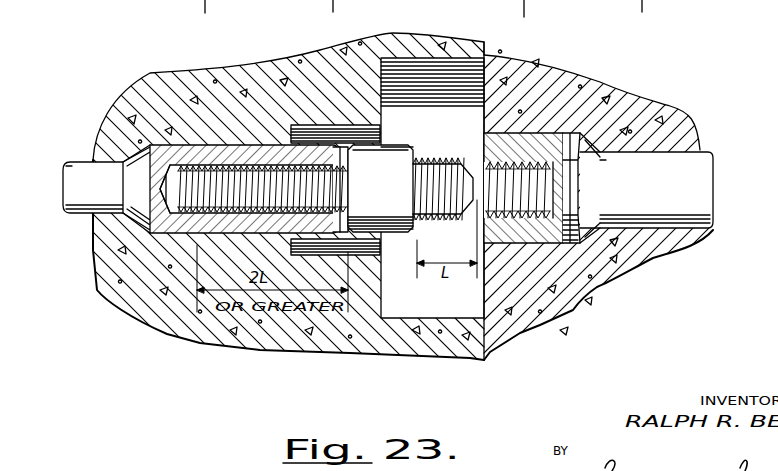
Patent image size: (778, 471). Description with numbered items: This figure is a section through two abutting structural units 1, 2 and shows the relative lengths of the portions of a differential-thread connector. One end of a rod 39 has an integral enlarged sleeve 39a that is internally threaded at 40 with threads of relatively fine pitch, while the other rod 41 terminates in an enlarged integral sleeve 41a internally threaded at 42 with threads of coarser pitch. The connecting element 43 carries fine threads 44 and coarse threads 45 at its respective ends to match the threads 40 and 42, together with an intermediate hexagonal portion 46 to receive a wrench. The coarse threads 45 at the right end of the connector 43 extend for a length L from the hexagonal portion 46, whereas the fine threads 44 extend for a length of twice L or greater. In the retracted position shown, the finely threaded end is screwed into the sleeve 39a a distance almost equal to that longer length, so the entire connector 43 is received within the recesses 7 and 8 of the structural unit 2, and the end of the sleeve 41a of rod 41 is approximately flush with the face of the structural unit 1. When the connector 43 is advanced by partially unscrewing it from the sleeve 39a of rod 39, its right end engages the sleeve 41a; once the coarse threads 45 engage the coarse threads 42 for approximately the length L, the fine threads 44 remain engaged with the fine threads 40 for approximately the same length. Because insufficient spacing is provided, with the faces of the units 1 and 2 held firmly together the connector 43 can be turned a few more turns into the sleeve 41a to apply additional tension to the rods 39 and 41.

The structural unit 1 is at (607, 82).
The structural unit 2 is at (303, 60).
The recess 7 is at (247, 146).
The recess 8 is at (355, 127).
The rod 39 is at (93, 197).
The sleeve 39a is at (167, 228).
The threads 40 is at (173, 182).
The rod 41 is at (705, 172).
The sleeve 41a is at (557, 240).
The threads 42 is at (522, 213).
The connecting element 43 is at (418, 125).
The threads 44 is at (332, 192).
The threads 45 is at (427, 217).
The hexagonal portion 46 is at (393, 210).